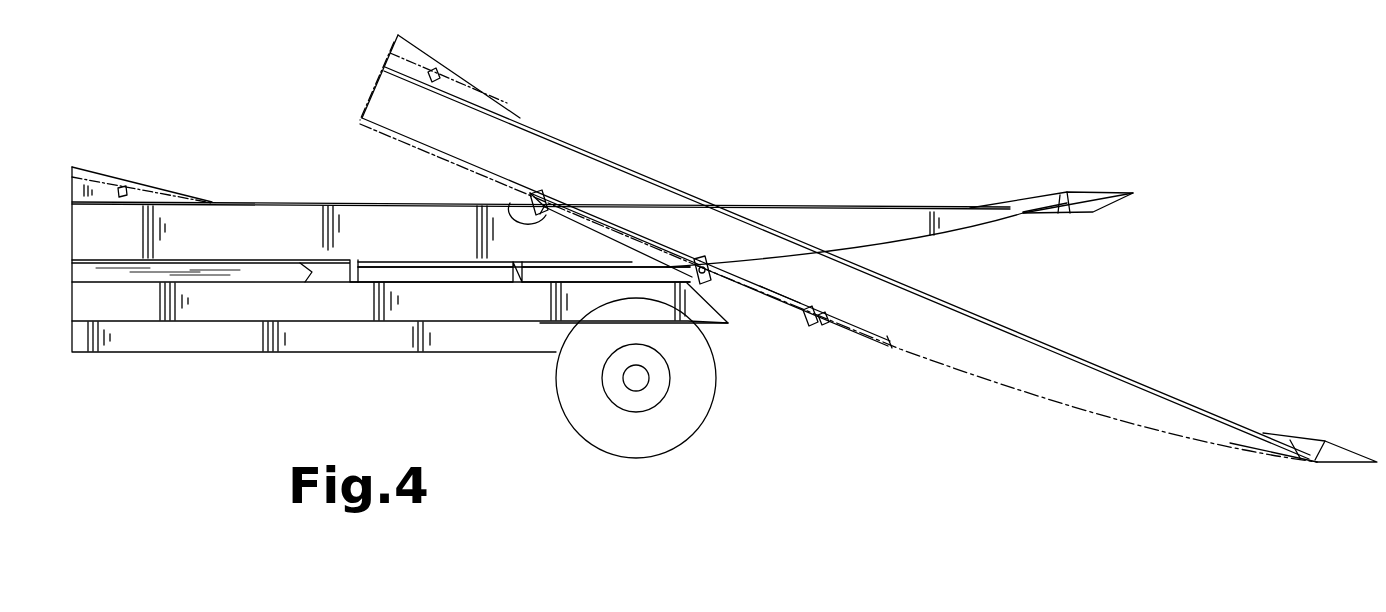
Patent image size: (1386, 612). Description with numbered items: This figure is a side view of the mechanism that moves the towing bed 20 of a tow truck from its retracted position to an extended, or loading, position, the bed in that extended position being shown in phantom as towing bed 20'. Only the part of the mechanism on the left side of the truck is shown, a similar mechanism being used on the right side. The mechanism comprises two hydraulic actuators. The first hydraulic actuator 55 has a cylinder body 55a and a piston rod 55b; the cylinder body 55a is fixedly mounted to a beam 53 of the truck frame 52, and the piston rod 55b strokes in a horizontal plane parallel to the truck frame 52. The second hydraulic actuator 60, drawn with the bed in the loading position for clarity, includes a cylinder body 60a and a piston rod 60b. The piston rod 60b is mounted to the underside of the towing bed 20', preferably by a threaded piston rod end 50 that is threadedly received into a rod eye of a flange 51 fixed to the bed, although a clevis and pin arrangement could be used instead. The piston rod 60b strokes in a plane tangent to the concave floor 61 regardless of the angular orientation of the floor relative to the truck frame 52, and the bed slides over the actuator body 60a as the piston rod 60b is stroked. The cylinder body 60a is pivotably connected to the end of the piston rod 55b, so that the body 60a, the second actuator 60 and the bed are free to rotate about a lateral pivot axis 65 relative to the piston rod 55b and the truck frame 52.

The towing bed 20 is at (602, 208).
The towing bed in extended loading position 20' is at (868, 248).
The threaded piston rod end 50 is at (825, 324).
The flange 51 is at (808, 326).
The truck frame 52 is at (206, 339).
The beam 53 is at (240, 275).
The first hydraulic actuator 55 is at (524, 312).
The cylinder body 55a is at (435, 272).
The piston rod 55b is at (601, 252).
The second hydraulic actuator 60 is at (623, 232).
The cylinder body 60a is at (510, 203).
The piston rod 60b is at (782, 308).
The concave floor 61 is at (1040, 398).
The lateral pivot axis 65 is at (702, 262).